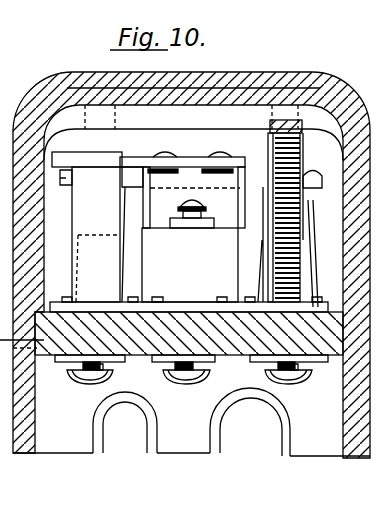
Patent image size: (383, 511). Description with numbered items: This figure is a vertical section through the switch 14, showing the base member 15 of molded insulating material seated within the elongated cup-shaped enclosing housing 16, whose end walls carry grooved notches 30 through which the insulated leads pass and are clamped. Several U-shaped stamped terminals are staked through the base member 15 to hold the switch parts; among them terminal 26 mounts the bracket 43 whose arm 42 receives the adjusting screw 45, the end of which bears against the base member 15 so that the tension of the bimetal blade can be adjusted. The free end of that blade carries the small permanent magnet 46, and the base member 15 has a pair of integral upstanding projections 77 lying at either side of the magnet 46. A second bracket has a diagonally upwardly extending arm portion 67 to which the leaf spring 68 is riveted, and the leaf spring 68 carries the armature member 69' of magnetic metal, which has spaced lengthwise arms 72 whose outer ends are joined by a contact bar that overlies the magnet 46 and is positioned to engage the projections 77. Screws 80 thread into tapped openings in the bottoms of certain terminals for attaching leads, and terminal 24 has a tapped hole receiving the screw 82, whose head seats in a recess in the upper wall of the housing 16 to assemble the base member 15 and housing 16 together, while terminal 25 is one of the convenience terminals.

The switch 14 is at (304, 67).
The enclosing housing 16 is at (78, 80).
The grooved notches 30 is at (103, 437).
The base member 15 is at (183, 312).
The arm portion 67 is at (90, 174).
The arms 72 is at (68, 185).
The upstanding projections 77 is at (93, 235).
The leaf spring 68 is at (233, 157).
The armature member 69' is at (183, 153).
The permanent magnet 46 is at (152, 214).
The adjusting screw 45 is at (204, 206).
The bracket 43 is at (227, 241).
The arm 42 is at (190, 228).
The screw 82 is at (300, 157).
The terminal 25 is at (78, 375).
The terminal 26 is at (182, 373).
The terminal 24 is at (310, 362).
The screws 80 is at (113, 371).